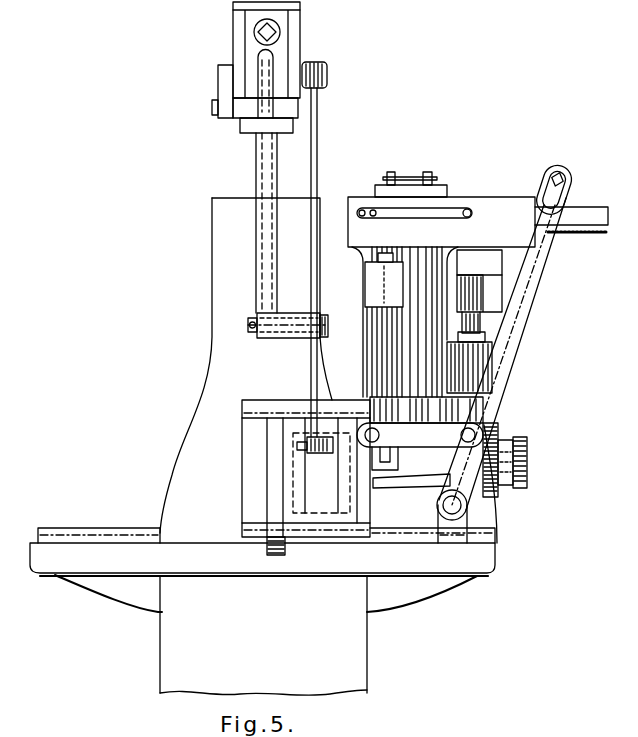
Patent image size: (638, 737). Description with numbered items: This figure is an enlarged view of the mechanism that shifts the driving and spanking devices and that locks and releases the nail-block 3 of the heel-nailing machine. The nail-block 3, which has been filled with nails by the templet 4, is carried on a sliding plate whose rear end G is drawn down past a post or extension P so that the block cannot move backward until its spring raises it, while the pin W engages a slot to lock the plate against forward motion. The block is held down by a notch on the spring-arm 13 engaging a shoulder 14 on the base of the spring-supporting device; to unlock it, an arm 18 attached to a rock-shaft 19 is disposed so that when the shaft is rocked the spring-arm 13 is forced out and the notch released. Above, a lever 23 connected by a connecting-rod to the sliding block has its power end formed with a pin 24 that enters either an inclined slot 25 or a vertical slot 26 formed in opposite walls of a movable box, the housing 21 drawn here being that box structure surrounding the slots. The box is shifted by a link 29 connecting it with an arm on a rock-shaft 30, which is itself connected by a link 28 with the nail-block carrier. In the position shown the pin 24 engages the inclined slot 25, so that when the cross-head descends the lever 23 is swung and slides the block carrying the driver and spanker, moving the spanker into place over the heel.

The nail-block 3 is at (444, 195).
The templet 4 is at (404, 182).
The pin W is at (476, 207).
The rear end of the sliding plate G is at (600, 210).
The post or extension P is at (512, 263).
The spring-arm 13 is at (385, 345).
The shoulder 14 is at (398, 457).
The arm 18 is at (415, 483).
The rock-shaft 19 is at (457, 483).
The housing 21 is at (292, 388).
The lever 23 is at (325, 262).
The pin 24 is at (327, 453).
The inclined slot 25 is at (295, 488).
The vertical slot 26 is at (343, 488).
The link 28 is at (512, 333).
The link 29 is at (420, 436).
The rock-shaft 30 is at (463, 512).